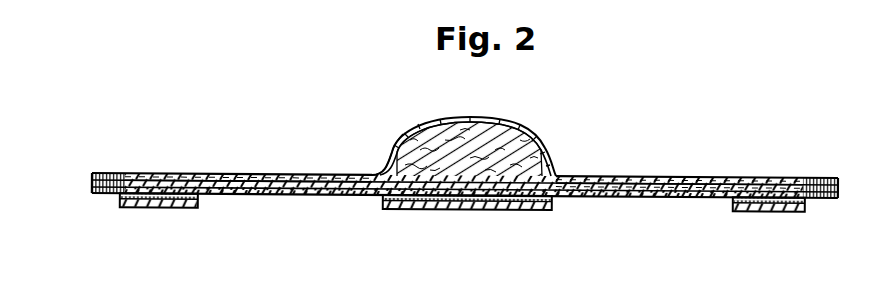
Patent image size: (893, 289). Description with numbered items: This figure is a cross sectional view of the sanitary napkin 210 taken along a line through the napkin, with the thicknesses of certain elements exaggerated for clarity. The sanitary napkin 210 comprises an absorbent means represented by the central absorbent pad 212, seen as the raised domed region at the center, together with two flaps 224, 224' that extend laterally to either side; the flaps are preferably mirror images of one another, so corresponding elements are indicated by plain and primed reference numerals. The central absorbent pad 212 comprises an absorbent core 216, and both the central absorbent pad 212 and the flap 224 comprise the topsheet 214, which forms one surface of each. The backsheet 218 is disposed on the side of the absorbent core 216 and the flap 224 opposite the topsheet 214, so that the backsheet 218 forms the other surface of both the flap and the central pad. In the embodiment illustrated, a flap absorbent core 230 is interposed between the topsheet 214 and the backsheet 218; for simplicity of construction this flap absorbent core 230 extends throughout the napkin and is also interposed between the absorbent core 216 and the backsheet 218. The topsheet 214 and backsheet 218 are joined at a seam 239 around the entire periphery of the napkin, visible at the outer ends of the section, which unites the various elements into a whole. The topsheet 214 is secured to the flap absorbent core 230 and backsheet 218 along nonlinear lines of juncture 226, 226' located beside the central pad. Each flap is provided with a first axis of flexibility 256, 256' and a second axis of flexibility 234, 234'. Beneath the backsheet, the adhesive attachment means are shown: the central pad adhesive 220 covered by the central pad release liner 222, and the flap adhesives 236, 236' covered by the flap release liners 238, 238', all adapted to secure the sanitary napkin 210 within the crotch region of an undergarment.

The sanitary napkin 210 is at (509, 110).
The central absorbent pad 212 is at (427, 110).
The topsheet 214 is at (537, 136).
The absorbent core 216 is at (479, 137).
The backsheet 218 is at (585, 194).
The central pad adhesive 220 is at (383, 196).
The central pad release liner 222 is at (422, 208).
The flap 224 is at (248, 147).
The flap 224' is at (679, 150).
The nonlinear line of juncture 226 is at (238, 144).
The nonlinear line of juncture 226' is at (697, 154).
The flap absorbent core 230 is at (307, 174).
The second axis of flexibility 234 is at (248, 145).
The second axis of flexibility 234' is at (686, 146).
The flap adhesive 236 is at (193, 212).
The flap adhesive 236' is at (732, 216).
The flap release liner 238 is at (171, 229).
The flap release liner 238' is at (754, 232).
The seam 239 is at (92, 174).
The first axis of flexibility 256 is at (366, 131).
The first axis of flexibility 256' is at (680, 138).